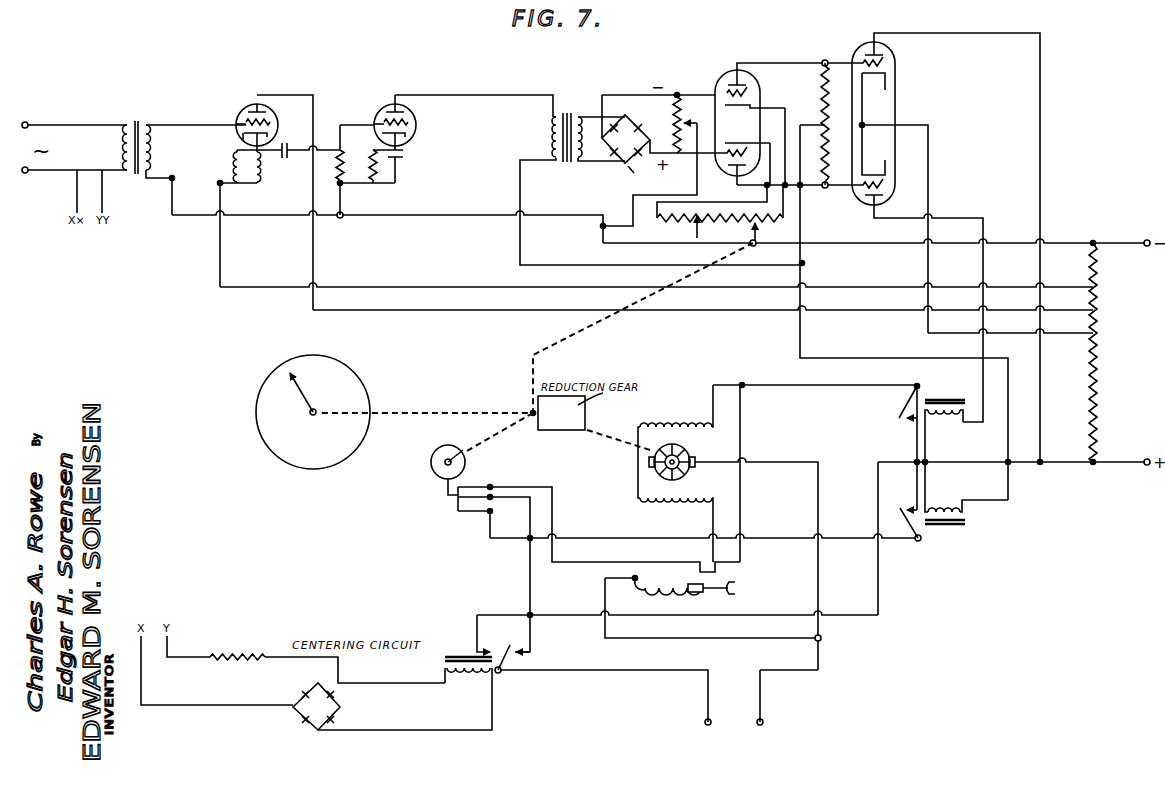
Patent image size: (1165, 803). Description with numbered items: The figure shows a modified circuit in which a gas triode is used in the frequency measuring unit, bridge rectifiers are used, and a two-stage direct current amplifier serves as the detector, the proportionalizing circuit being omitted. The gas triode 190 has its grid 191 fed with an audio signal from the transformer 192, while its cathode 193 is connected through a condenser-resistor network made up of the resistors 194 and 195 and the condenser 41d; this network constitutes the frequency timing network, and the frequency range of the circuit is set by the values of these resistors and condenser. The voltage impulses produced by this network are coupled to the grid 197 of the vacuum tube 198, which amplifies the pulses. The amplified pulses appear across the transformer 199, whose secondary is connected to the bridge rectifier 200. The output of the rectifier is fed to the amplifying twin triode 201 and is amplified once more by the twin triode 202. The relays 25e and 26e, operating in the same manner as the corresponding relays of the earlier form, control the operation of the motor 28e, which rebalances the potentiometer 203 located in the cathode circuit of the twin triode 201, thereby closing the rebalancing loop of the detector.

The gas triode 190 is at (273, 112).
The grid 191 is at (240, 121).
The transformer 192 is at (138, 122).
The cathode 193 is at (243, 138).
The resistor 194 is at (220, 183).
The resistor 195 is at (259, 178).
The condenser 41d is at (259, 157).
The grid 197 is at (375, 117).
The vacuum tube 198 is at (416, 124).
The transformer 199 is at (564, 113).
The bridge rectifier 200 is at (626, 151).
The amplifying twin triode 201 is at (716, 78).
The twin triode 202 is at (858, 53).
The potentiometer 203 is at (784, 221).
The relay 26e is at (949, 388).
The motor 28e is at (690, 452).
The relay 25e is at (932, 520).